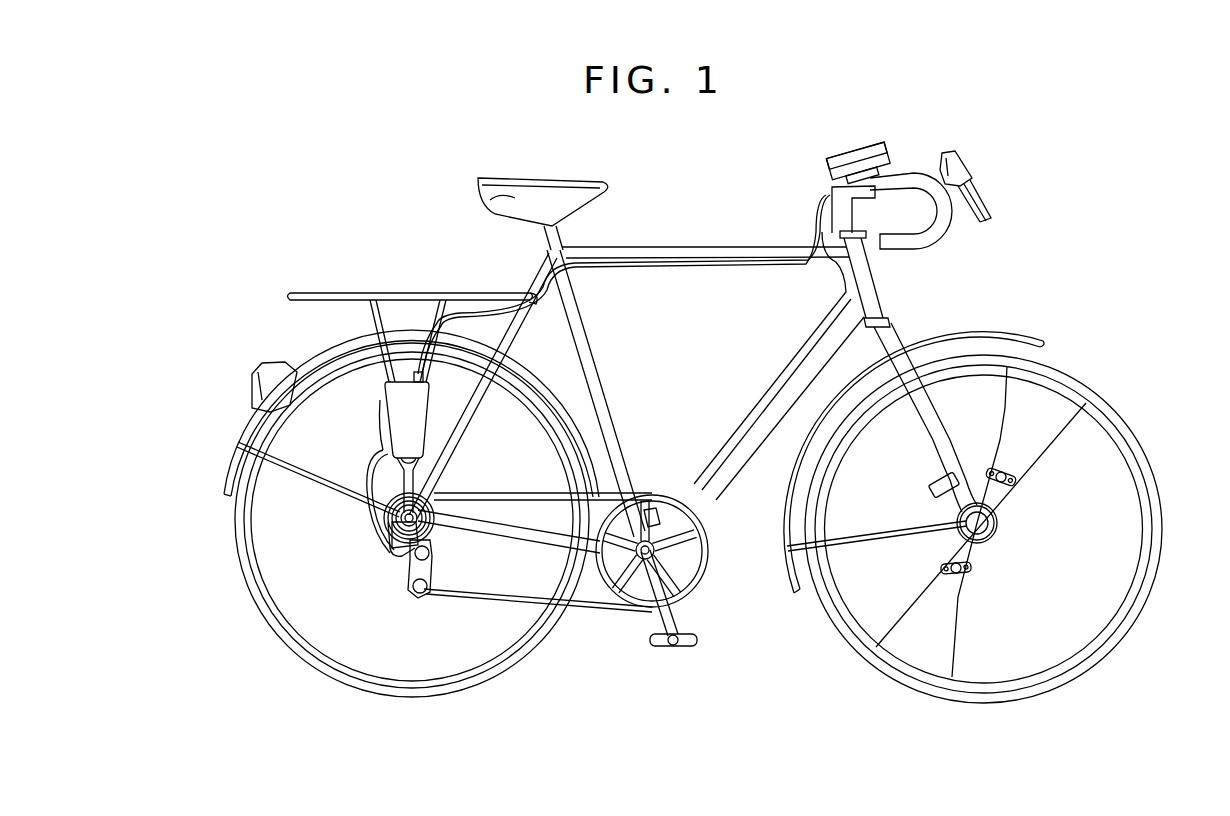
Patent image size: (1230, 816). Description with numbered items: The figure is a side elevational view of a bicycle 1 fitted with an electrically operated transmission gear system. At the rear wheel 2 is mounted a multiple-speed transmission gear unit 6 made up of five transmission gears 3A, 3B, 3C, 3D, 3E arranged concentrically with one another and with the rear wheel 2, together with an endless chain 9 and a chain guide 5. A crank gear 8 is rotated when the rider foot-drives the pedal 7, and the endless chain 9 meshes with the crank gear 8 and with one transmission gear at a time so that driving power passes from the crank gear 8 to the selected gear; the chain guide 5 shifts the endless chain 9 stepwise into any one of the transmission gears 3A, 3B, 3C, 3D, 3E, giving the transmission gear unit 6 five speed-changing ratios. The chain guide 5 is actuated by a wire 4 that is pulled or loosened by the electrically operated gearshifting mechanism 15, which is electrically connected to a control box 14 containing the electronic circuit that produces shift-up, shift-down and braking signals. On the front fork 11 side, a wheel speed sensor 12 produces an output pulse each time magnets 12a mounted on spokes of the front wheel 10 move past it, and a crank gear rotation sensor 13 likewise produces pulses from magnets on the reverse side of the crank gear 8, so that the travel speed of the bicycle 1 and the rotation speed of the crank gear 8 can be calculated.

The bicycle 1 is at (712, 234).
The rear wheel 2 is at (280, 583).
The transmission gear 3A is at (396, 503).
The transmission gear 3B is at (385, 511).
The transmission gear 3C is at (378, 530).
The transmission gear 3D is at (398, 560).
The transmission gear 3E is at (430, 546).
The wire 4 is at (382, 470).
The chain guide 5 is at (428, 600).
The multiple-speed transmission gear unit 6 is at (374, 562).
The pedal 7 is at (692, 648).
The crank gear 8 is at (705, 562).
The endless chain 9 is at (542, 497).
The front wheel 10 is at (1118, 517).
The front fork 11 is at (910, 445).
The wheel speed sensor 12 is at (945, 477).
The magnets 12a is at (1007, 487).
The crank gear rotation sensor 13 is at (652, 510).
The control box 14 is at (852, 158).
The electrically operated gearshifting mechanism 15 is at (394, 392).